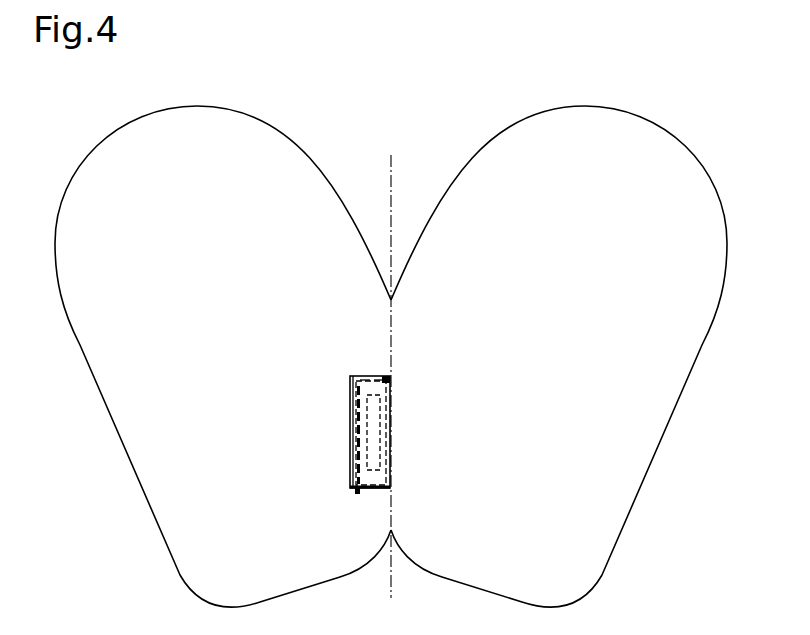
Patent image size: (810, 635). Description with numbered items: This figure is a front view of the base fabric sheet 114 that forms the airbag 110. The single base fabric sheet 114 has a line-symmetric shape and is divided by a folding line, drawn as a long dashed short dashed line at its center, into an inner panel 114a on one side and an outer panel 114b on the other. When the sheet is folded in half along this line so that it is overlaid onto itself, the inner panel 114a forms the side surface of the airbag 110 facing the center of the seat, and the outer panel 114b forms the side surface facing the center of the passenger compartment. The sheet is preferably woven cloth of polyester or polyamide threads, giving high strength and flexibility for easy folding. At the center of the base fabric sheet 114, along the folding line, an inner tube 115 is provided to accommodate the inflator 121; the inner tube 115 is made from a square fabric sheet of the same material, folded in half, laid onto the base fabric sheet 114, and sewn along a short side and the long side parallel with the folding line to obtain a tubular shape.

The airbag 110 is at (391, 326).
The base fabric sheet 114 is at (462, 118).
The inner panel 114a is at (325, 198).
The outer panel 114b is at (457, 198).
The inner tube 115 is at (404, 435).
The inflator 121 is at (380, 422).